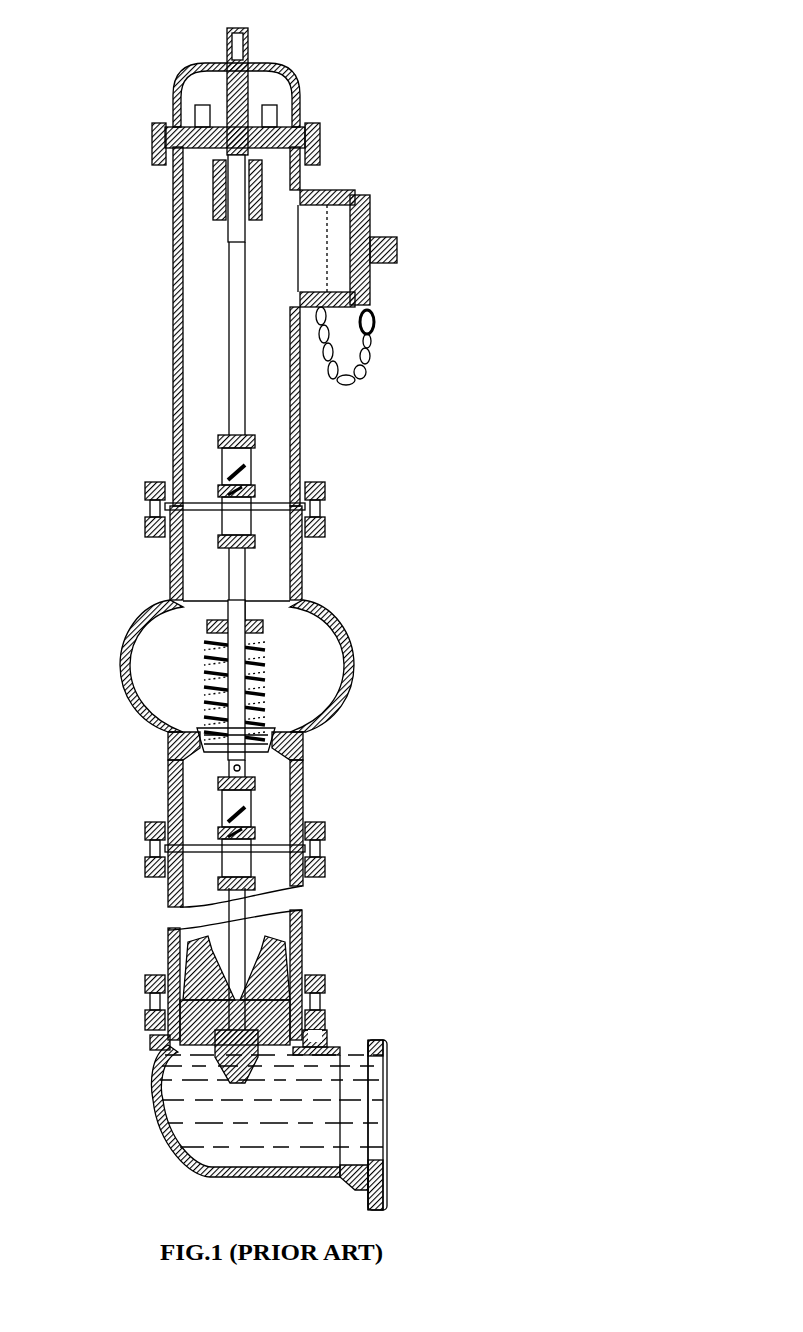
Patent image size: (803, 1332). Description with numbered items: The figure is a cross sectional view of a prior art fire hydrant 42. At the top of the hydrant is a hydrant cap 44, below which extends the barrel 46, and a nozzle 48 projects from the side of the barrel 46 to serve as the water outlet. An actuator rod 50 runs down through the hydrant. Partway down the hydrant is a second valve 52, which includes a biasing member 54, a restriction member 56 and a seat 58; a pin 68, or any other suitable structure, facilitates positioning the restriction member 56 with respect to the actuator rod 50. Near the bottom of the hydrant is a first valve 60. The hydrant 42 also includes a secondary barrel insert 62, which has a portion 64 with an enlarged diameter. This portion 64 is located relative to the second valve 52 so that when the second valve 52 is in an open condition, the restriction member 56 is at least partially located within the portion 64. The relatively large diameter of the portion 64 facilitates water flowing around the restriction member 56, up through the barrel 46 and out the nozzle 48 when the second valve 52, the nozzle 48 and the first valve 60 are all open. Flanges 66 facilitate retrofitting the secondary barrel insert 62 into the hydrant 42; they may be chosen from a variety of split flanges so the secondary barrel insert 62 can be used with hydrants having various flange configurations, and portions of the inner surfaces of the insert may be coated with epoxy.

The fire hydrant 42 is at (345, 148).
The hydrant cap 44 is at (290, 82).
The barrel 46 is at (173, 242).
The nozzle 48 is at (362, 202).
The actuator rod 50 is at (232, 357).
The second valve 52 is at (303, 683).
The biasing member 54 is at (212, 657).
The restriction member 56 is at (185, 742).
The seat 58 is at (303, 750).
The first valve 60 is at (303, 983).
The secondary barrel insert 62 is at (303, 570).
The portion with an enlarged diameter 64 is at (112, 647).
The flanges 66 is at (132, 504).
The pin 68 is at (258, 625).